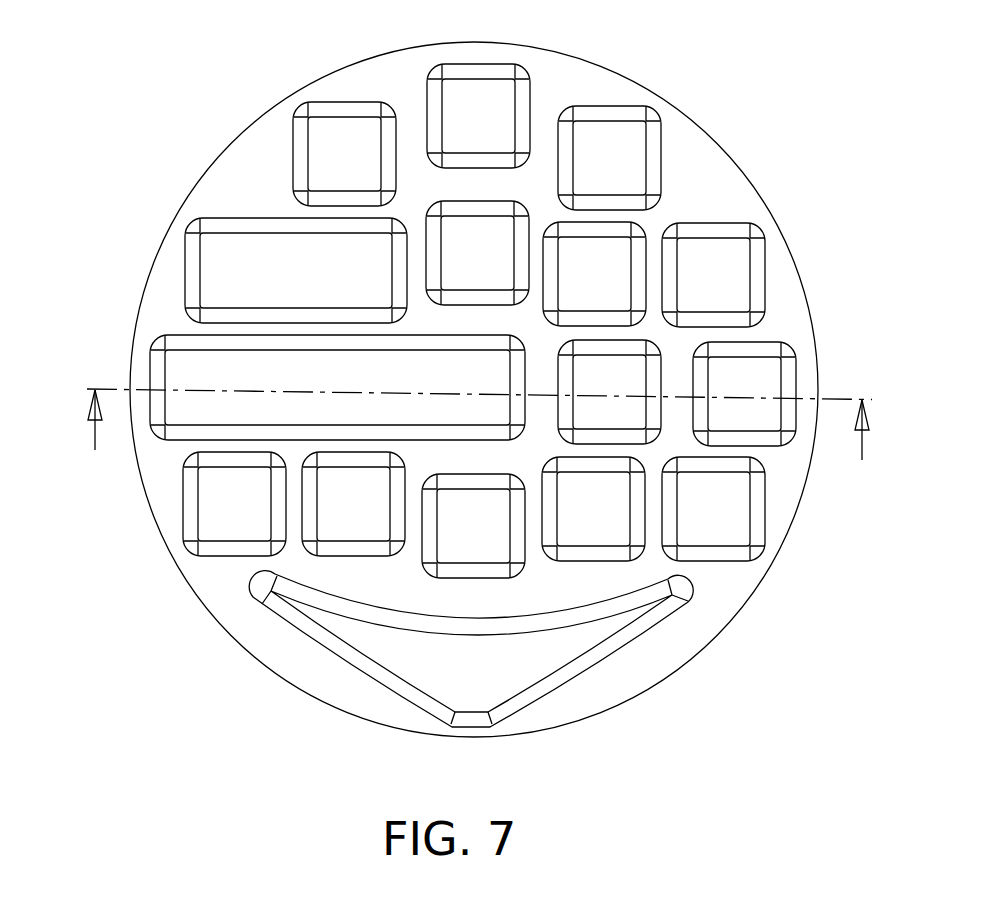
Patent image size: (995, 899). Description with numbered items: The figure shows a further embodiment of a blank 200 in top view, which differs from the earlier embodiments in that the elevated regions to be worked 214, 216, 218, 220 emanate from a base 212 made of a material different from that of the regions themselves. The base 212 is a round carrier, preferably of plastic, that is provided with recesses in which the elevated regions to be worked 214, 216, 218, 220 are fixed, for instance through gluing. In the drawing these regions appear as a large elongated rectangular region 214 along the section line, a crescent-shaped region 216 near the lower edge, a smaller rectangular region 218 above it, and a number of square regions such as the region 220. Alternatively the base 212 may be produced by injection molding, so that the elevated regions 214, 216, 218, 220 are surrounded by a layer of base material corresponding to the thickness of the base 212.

The carrier tray assembly 200 is at (187, 140).
The base 212 is at (705, 618).
The elevated region to be worked 214 is at (195, 425).
The elevated region to be worked 216 is at (503, 673).
The elevated region to be worked 218 is at (235, 280).
The elevated region to be worked 220 is at (717, 508).